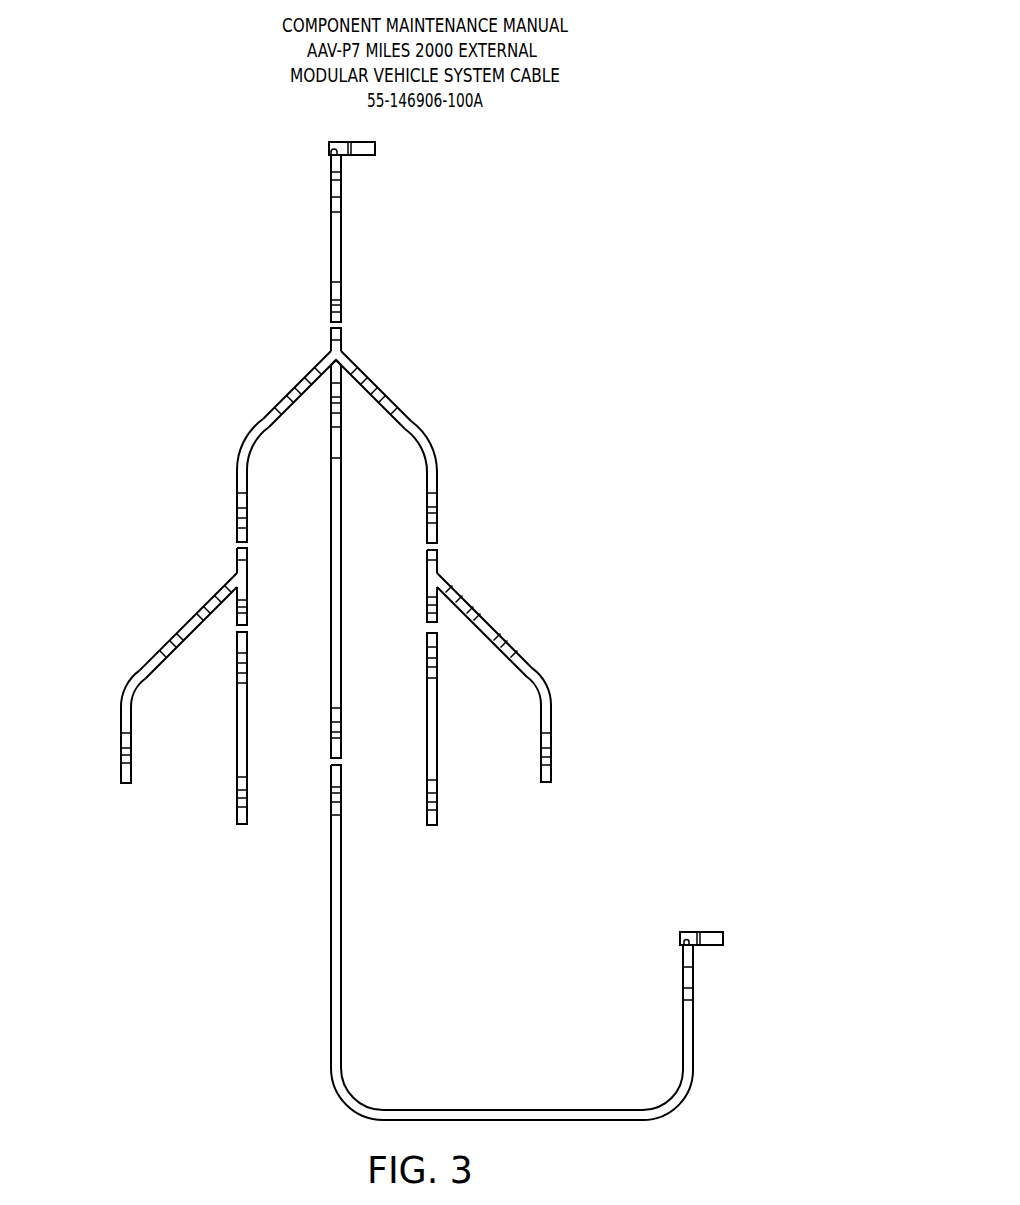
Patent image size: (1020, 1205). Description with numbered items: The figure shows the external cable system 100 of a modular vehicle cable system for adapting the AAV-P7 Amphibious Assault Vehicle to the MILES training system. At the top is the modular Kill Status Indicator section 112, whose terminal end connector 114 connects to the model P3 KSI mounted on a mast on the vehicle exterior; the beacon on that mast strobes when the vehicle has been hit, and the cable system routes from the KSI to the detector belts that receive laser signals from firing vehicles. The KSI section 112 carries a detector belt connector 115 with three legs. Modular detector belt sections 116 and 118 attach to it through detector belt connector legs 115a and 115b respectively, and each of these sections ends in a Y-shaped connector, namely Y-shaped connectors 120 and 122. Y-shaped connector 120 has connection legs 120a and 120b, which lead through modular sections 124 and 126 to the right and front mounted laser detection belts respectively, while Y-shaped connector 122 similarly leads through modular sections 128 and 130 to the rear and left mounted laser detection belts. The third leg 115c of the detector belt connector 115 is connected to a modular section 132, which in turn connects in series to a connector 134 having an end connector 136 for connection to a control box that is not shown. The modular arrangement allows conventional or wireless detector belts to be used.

The external cable system 100 is at (148, 179).
The KSI section 112 is at (344, 245).
The terminal end connector 114 is at (360, 141).
The detector belt connector 115 is at (347, 347).
The detector belt connector leg 115a is at (322, 356).
The detector belt connector leg 115b is at (356, 358).
The third leg 115c is at (333, 375).
The modular detector belt section 116 is at (236, 466).
The modular detector belt section 118 is at (422, 428).
The Y-shaped connector 120 is at (237, 568).
The connection leg 120a is at (228, 578).
The connection leg 120b is at (247, 587).
The Y-shaped connector 122 is at (437, 566).
The modular section 124 is at (122, 718).
The modular section 126 is at (237, 720).
The modular section 128 is at (438, 748).
The modular section 130 is at (552, 720).
The modular section 132 is at (343, 565).
The connector 134 is at (342, 958).
The end connector 136 is at (727, 938).